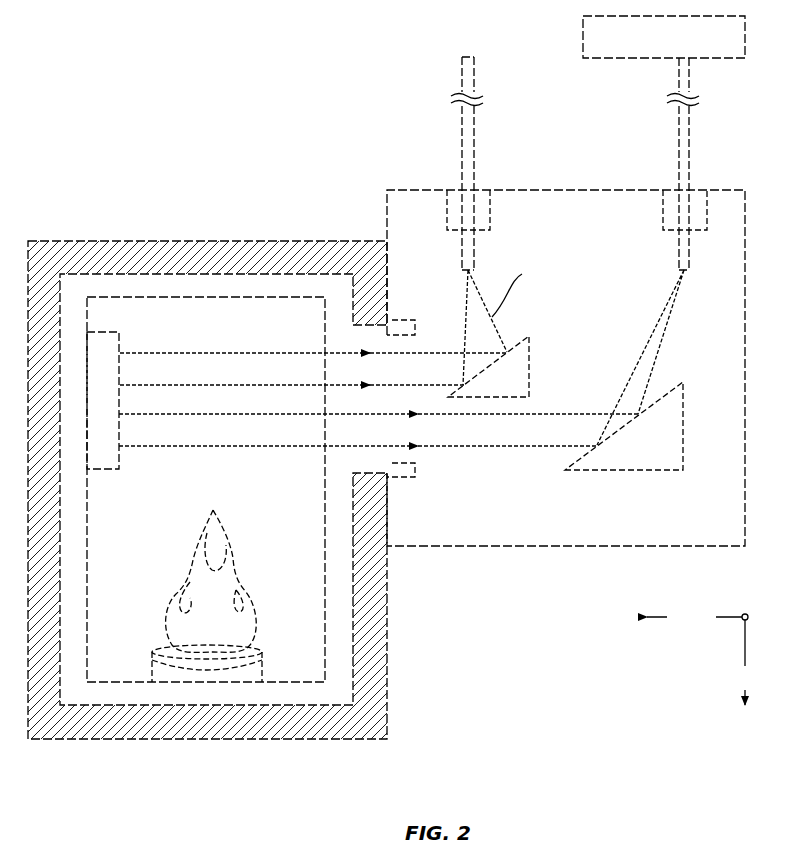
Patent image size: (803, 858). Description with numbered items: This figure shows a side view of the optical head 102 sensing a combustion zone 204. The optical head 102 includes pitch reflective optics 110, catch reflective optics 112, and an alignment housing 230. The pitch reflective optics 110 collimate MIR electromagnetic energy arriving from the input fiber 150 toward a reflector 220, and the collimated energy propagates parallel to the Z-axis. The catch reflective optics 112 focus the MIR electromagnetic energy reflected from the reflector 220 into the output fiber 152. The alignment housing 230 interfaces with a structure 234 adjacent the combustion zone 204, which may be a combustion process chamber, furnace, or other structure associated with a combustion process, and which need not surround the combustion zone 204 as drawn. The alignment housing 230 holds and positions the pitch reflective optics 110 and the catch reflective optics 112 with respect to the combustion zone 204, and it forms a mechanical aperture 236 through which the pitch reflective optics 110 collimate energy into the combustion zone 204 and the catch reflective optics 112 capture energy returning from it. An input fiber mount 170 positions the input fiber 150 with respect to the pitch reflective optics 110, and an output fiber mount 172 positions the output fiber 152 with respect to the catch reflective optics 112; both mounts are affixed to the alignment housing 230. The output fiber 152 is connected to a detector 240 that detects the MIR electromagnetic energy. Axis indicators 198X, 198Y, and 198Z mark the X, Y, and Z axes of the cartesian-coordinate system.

The optical head 102 is at (322, 172).
The pitch reflective optics 110 is at (531, 352).
The catch reflective optics 112 is at (684, 392).
The input fiber 150 is at (462, 163).
The output fiber 152 is at (677, 162).
The input fiber mount 170 is at (492, 214).
The output fiber mount 172 is at (661, 212).
The axis indicator 198X is at (749, 662).
The axis indicator 198Y is at (742, 622).
The axis indicator 198Z is at (697, 617).
The combustion zone 204 is at (90, 523).
The reflector 220 is at (122, 333).
The alignment housing 230 is at (517, 549).
The structure 234 is at (134, 240).
The mechanical aperture 236 is at (404, 318).
The detector 240 is at (664, 37).